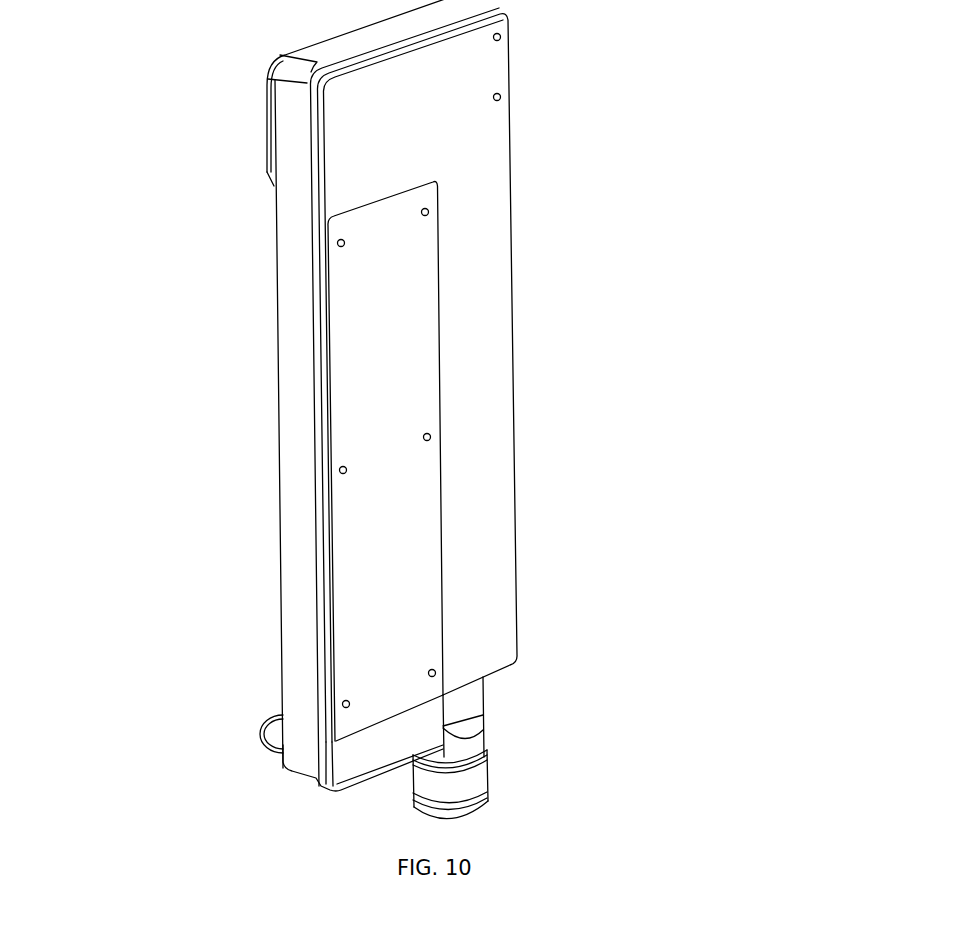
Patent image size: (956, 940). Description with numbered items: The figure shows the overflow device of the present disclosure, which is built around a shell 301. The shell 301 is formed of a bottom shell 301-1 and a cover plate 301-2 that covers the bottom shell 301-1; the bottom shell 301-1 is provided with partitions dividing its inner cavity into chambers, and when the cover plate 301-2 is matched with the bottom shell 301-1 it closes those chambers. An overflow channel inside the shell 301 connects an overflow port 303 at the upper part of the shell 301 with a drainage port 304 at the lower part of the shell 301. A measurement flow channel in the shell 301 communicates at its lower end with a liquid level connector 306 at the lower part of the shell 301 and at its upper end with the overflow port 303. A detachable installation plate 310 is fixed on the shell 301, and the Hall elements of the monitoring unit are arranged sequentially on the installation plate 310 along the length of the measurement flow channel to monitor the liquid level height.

The shell 301 is at (437, 397).
The bottom shell 301-1 is at (377, 397).
The cover plate 301-2 is at (490, 143).
The overflow port 303 is at (266, 134).
The drainage port 304 is at (467, 775).
The liquid level connector 306 is at (260, 740).
The installation plate 310 is at (393, 363).